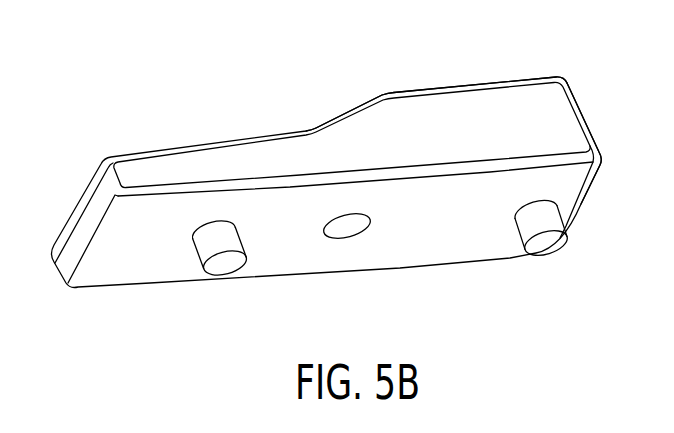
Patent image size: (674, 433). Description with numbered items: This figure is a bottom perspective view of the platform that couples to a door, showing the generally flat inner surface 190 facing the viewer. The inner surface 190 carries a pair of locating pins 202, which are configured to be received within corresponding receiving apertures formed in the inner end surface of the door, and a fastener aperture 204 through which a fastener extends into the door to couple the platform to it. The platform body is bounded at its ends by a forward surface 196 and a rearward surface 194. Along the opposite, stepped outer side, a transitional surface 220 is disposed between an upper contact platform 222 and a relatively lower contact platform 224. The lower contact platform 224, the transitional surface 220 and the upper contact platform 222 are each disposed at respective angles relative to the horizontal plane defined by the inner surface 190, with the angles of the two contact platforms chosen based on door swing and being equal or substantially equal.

The inner surface 190 is at (423, 247).
The rearward surface 194 is at (573, 118).
The forward surface 196 is at (85, 208).
The locating pins 202 is at (203, 255).
The fastener aperture 204 is at (345, 232).
The transitional surface 220 is at (348, 110).
The upper contact platform 222 is at (495, 91).
The lower contact platform 224 is at (190, 148).